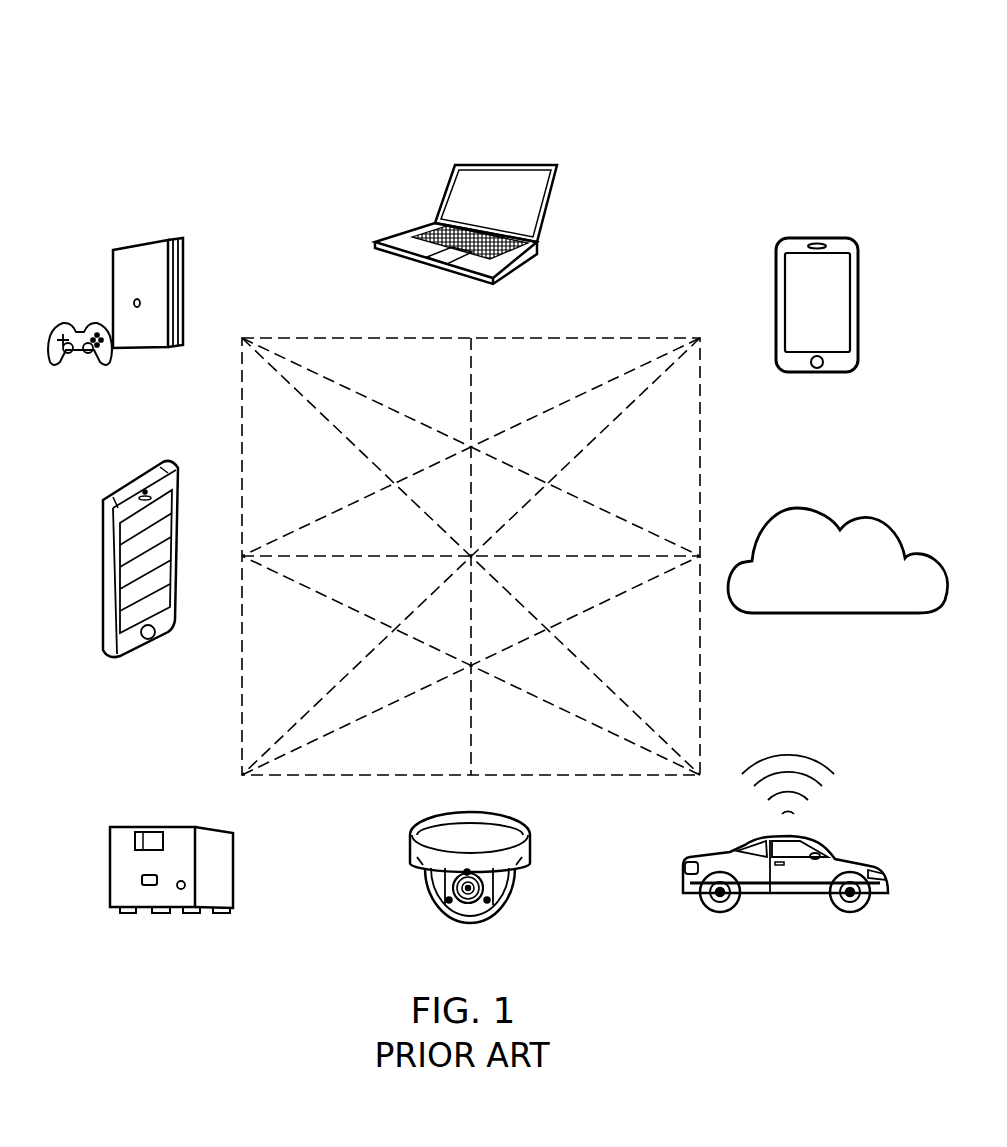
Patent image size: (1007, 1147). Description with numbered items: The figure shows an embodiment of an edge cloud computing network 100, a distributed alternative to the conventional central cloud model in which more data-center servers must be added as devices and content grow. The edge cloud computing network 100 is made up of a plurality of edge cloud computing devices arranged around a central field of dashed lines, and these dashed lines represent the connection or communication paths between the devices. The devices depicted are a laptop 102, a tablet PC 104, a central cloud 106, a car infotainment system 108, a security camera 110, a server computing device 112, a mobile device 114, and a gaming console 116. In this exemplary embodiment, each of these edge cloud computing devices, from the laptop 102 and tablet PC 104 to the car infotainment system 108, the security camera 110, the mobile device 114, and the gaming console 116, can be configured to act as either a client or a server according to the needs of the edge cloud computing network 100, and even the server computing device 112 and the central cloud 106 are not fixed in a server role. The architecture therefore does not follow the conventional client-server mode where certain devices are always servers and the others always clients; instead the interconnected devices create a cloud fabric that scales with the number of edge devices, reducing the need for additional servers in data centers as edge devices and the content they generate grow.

The edge cloud computing network 100 is at (138, 73).
The laptop 102 is at (505, 165).
The tablet PC 104 is at (817, 238).
The central cloud 106 is at (867, 520).
The car infotainment system 108 is at (690, 860).
The security camera 110 is at (412, 853).
The server computing device 112 is at (152, 827).
The mobile device 114 is at (133, 480).
The gaming console 116 is at (138, 246).